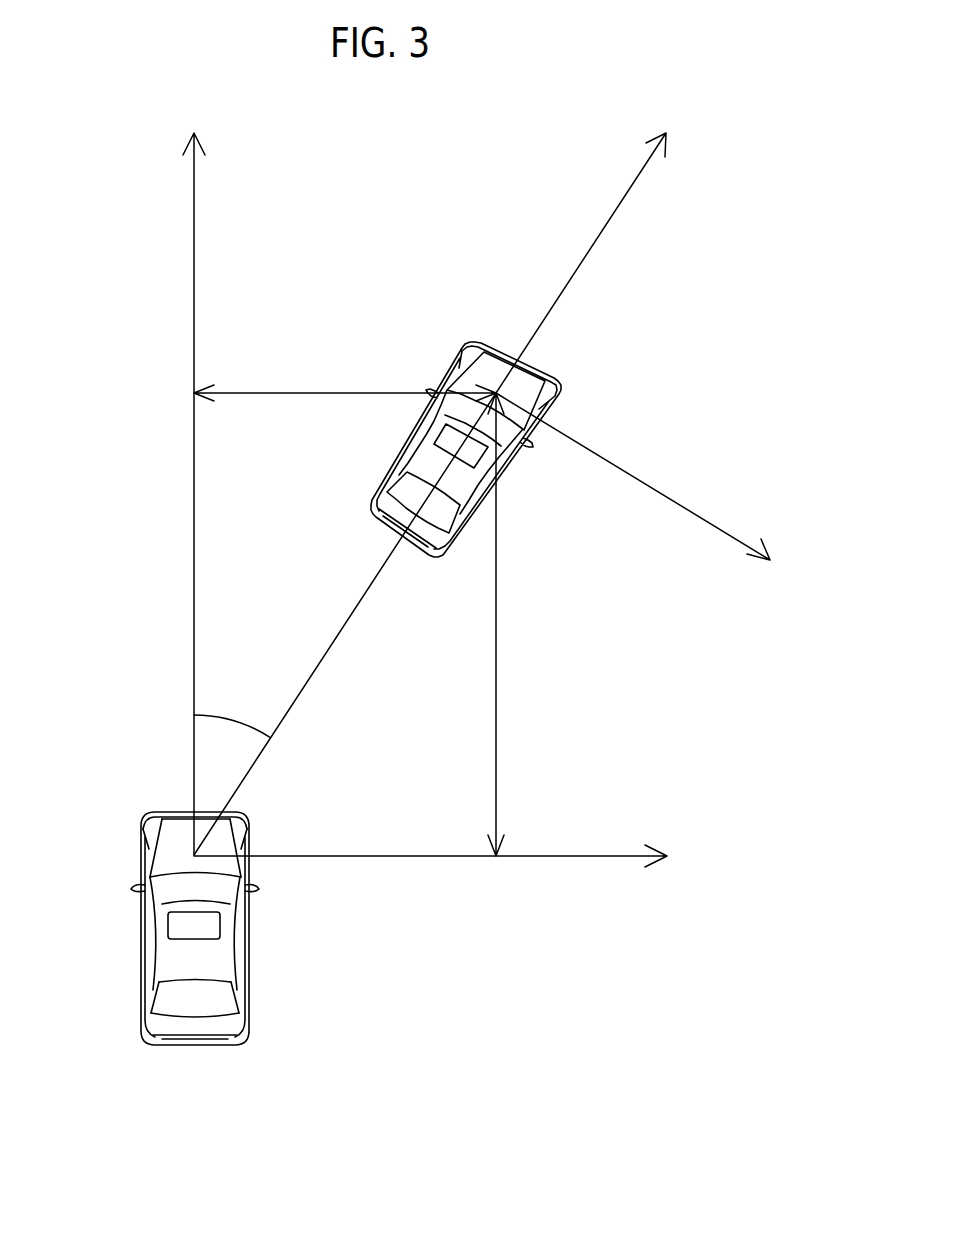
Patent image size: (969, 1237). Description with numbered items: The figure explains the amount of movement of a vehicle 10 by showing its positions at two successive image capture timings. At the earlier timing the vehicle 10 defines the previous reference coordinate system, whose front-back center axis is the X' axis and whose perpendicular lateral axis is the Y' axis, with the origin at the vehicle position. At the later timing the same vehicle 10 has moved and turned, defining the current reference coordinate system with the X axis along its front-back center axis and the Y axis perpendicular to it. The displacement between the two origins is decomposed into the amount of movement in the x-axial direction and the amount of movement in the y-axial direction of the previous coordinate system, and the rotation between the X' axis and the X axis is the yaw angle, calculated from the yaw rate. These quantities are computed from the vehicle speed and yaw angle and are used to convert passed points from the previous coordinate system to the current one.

The vehicle 10 is at (141, 911).
The X-axis X is at (430, 494).
The Y-axis Y is at (633, 487).
The X'-axis X' is at (181, 494).
The Y'-axis Y' is at (430, 873).